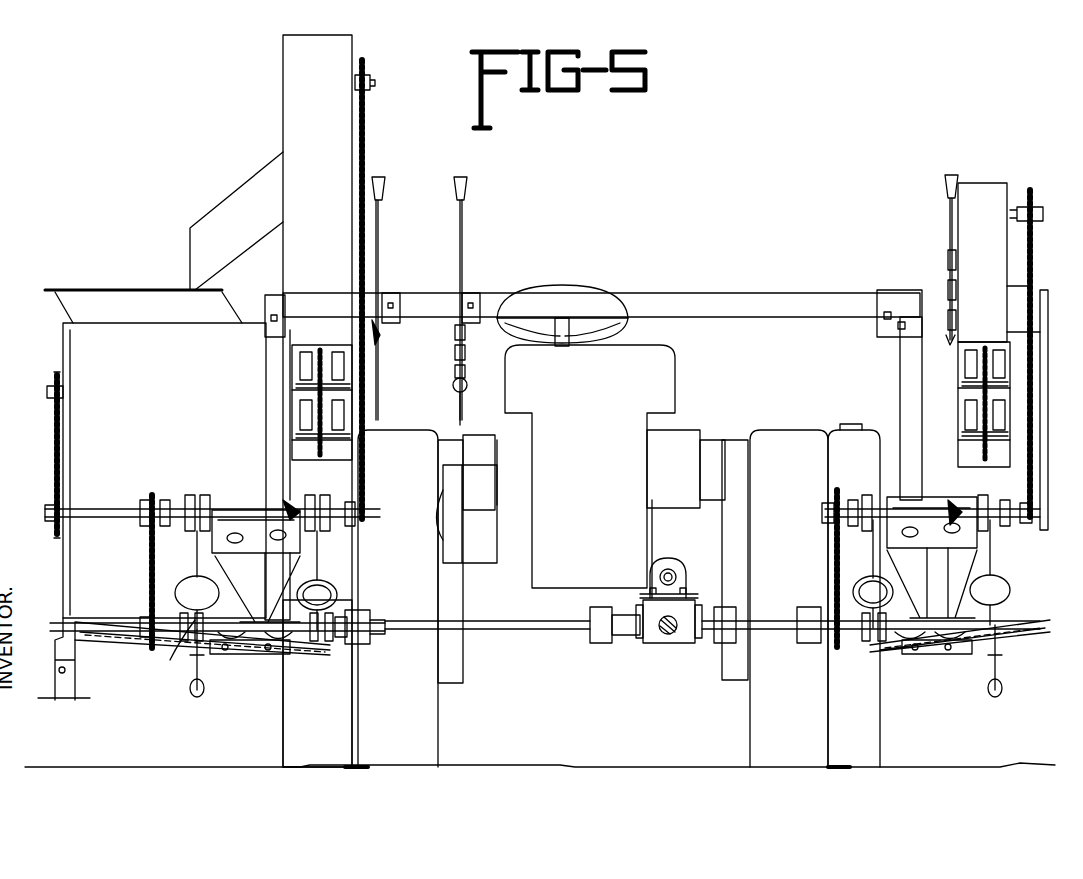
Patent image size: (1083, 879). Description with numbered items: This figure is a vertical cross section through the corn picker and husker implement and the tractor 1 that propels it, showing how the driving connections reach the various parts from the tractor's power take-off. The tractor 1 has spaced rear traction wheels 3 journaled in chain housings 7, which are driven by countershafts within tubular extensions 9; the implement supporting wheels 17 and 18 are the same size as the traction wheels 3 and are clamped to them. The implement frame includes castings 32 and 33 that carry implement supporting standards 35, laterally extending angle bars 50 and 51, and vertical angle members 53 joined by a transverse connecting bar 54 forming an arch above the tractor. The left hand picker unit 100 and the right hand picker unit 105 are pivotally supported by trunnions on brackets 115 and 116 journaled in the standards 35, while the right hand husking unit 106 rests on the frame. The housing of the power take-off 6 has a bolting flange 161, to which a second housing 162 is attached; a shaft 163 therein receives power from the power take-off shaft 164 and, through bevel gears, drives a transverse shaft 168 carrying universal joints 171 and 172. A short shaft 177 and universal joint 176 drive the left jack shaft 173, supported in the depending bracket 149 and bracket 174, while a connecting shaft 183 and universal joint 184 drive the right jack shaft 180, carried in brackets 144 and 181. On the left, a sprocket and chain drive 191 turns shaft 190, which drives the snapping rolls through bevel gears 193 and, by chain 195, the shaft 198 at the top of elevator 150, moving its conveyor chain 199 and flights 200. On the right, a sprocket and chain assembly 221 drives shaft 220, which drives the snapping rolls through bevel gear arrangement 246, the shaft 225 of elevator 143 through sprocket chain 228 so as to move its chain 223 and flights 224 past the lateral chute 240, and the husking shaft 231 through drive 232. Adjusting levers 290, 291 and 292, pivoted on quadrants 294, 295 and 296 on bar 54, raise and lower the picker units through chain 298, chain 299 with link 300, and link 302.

The tractor 1 is at (675, 360).
The rear traction wheel 3 is at (425, 720).
The power take-off device 6 is at (672, 562).
The chain housing 7 is at (455, 664).
The tubular extension 9 is at (495, 455).
The implement supporting wheel 17 is at (852, 440).
The implement supporting wheel 18 is at (310, 731).
The casting member 32 is at (188, 588).
The casting member 33 is at (325, 592).
The implement supporting standard 35 is at (195, 548).
The laterally extending angle bar 50 is at (1008, 645).
The laterally extending angle bar 51 is at (122, 642).
The vertical angle member 53 is at (900, 382).
The transverse connecting bar 54 is at (728, 295).
The picker unit 100 is at (1046, 530).
The picker unit 105 is at (270, 398).
The husking unit 106 is at (98, 422).
The bracket 115 is at (920, 520).
The bracket 116 is at (250, 515).
The elevator 143 is at (305, 172).
The bracket 144 is at (195, 640).
The depending bracket 149 is at (1000, 605).
The elevator 150 is at (975, 268).
The bolting flange 161 is at (640, 598).
The second housing 162 is at (662, 647).
The shaft 163 is at (672, 635).
The power take-off shaft 164 is at (660, 570).
The transverse shaft 168 is at (630, 638).
The universal joint 171 is at (597, 645).
The universal joint 172 is at (727, 605).
The jack shaft 173 is at (920, 648).
The bracket 174 is at (866, 642).
The universal joint 176 is at (808, 606).
The short shaft 177 is at (770, 630).
The jack shaft 180 is at (252, 648).
The bracket 181 is at (318, 642).
The connecting shaft 183 is at (520, 630).
The universal joint 184 is at (358, 640).
The shaft 190 is at (1010, 508).
The sprocket and chain drive 191 is at (832, 535).
The bevel gears 193 is at (953, 505).
The sprocket chain 195 is at (1028, 280).
The shaft 198 is at (1012, 205).
The conveyor chain 199 is at (985, 345).
The flights 200 is at (960, 380).
The shaft 220 is at (115, 512).
The sprocket and chain assembly 221 is at (148, 590).
The chain 223 is at (315, 358).
The paddles or flights 224 is at (300, 380).
The shaft 225 is at (372, 82).
The sprocket chain 228 is at (366, 128).
The shaft 231 is at (46, 393).
The sprocket and chain drive 232 is at (55, 478).
The lateral chute 240 is at (197, 245).
The bevel gear arrangement 246 is at (290, 505).
The adjusting lever 290 is at (384, 218).
The adjusting lever 291 is at (466, 218).
The adjusting lever 292 is at (950, 222).
The quadrant 294 is at (392, 295).
The quadrant 295 is at (470, 290).
The quadrant 296 is at (950, 260).
The chain 298 is at (376, 335).
The chain 299 is at (455, 355).
The link 300 is at (458, 405).
The link 302 is at (950, 358).